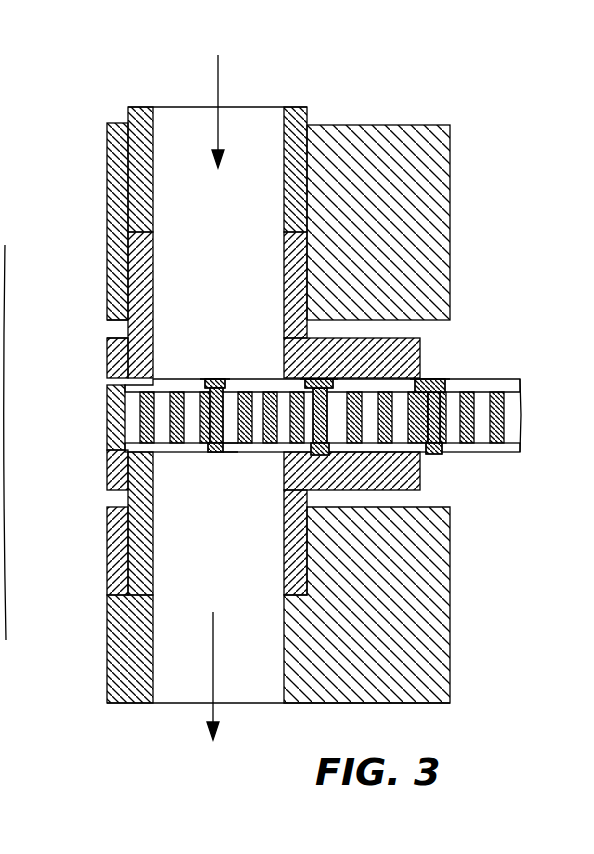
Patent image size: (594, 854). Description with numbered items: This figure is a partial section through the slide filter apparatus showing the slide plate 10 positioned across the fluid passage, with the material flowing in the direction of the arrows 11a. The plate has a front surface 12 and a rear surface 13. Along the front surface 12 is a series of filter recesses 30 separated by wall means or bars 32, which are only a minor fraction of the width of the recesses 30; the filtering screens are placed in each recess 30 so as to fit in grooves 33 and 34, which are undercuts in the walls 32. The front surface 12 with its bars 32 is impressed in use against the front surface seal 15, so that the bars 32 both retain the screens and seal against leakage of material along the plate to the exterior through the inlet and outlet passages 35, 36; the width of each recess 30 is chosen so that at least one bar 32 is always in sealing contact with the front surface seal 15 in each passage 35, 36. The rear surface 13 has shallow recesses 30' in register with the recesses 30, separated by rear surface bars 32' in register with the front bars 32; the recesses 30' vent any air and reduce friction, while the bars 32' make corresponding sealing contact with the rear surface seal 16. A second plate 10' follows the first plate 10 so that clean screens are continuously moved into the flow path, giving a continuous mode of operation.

The slide plate 10 is at (243, 417).
The second plate 10' is at (494, 396).
The arrows 11a is at (221, 97).
The front surface 12 is at (214, 378).
The rear surface 13 is at (223, 447).
The front surface seal 15 is at (107, 350).
The rear surface seal 16 is at (108, 473).
The recesses 30 is at (322, 357).
The shallow recesses 30' is at (335, 467).
The bars 32 is at (200, 474).
The rear surface bars 32' is at (353, 467).
The groove 33 is at (235, 386).
The groove 34 is at (205, 386).
The inlet passage 35 is at (120, 328).
The outlet passage 36 is at (405, 501).